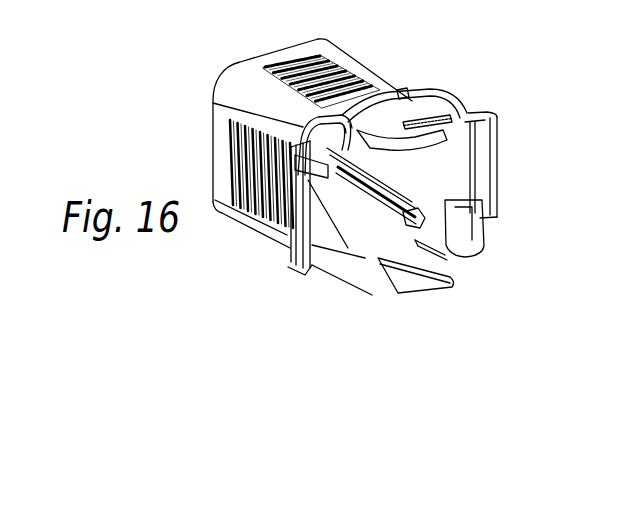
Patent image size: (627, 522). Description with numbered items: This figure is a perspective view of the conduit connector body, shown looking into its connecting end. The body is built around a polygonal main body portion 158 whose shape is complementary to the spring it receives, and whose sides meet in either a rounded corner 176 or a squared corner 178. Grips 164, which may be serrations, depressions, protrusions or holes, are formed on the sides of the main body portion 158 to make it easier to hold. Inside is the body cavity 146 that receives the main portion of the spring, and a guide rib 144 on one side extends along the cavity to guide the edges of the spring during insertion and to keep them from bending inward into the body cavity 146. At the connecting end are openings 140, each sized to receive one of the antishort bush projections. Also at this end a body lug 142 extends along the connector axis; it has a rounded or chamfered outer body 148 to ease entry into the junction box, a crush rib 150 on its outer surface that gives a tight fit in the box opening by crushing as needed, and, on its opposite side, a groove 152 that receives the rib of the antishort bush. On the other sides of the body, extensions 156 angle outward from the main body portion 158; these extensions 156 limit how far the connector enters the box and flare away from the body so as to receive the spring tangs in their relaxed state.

The opening 140 is at (315, 122).
The body lug 142 is at (448, 288).
The guide rib 144 is at (405, 220).
The body cavity 146 is at (407, 200).
The outer body 148 is at (420, 118).
The crush rib 150 is at (413, 122).
The groove 152 is at (422, 162).
The extension 156 is at (498, 190).
The main body portion 158 is at (357, 63).
The grips 164 is at (303, 62).
The rounded corner 176 is at (238, 88).
The squared corner 178 is at (260, 235).